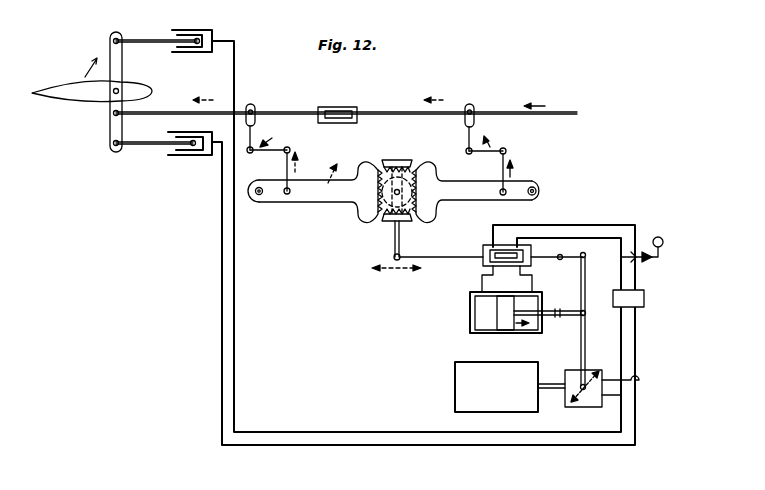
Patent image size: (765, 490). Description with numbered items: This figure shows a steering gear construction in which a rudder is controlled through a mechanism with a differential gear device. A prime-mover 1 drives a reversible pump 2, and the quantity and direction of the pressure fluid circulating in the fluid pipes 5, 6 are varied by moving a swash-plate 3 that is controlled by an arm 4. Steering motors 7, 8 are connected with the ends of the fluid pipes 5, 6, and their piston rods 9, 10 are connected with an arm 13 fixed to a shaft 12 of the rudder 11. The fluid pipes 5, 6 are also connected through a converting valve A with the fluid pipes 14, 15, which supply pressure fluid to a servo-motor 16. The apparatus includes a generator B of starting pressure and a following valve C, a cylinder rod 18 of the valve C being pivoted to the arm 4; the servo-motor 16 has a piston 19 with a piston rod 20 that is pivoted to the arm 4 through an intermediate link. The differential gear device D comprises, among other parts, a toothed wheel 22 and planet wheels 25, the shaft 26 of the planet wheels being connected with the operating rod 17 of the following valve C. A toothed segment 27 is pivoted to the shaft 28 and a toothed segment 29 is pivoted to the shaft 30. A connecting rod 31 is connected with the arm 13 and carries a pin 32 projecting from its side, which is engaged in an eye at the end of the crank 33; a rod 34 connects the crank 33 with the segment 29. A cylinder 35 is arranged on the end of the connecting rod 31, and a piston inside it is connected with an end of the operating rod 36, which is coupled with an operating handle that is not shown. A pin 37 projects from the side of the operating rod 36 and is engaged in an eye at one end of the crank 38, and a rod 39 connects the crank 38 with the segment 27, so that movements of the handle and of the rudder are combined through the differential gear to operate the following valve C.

The prime-mover 1 is at (455, 388).
The reversible pump 2 is at (595, 407).
The swash-plate 3 is at (575, 406).
The arm 4 is at (586, 336).
The fluid pipe 5 is at (550, 447).
The fluid pipe 6 is at (592, 433).
The steering motor 7 is at (205, 30).
The steering motor 8 is at (184, 157).
The piston rod 9 is at (148, 38).
The piston rod 10 is at (135, 150).
The rudder 11 is at (77, 97).
The shaft 12 is at (122, 90).
The arm 13 is at (110, 130).
The fluid pipe 14 is at (611, 238).
The fluid pipe 15 is at (570, 226).
The servo-motor 16 is at (470, 316).
The operating rod 17 is at (455, 259).
The cylinder rod 18 is at (548, 259).
The piston 19 is at (505, 322).
The piston rod 20 is at (556, 318).
The toothed wheel 22 is at (423, 172).
The planet wheel 25 is at (385, 166).
The shaft 26 is at (393, 243).
The toothed segment 27 is at (445, 195).
The shaft 28 is at (539, 190).
The toothed segment 29 is at (328, 195).
The shaft 30 is at (259, 197).
The connecting rod 31 is at (297, 110).
The pin 32 is at (251, 104).
The crank 33 is at (262, 132).
The rod 34 is at (284, 166).
The cylinder 35 is at (350, 107).
The operating rod 36 is at (431, 110).
The pin 37 is at (470, 104).
The crank 38 is at (475, 132).
The rod 39 is at (500, 172).
The converting valve A is at (644, 298).
The generator of starting pressure B is at (664, 242).
The following valve C is at (483, 250).
The differential gear device D is at (414, 158).